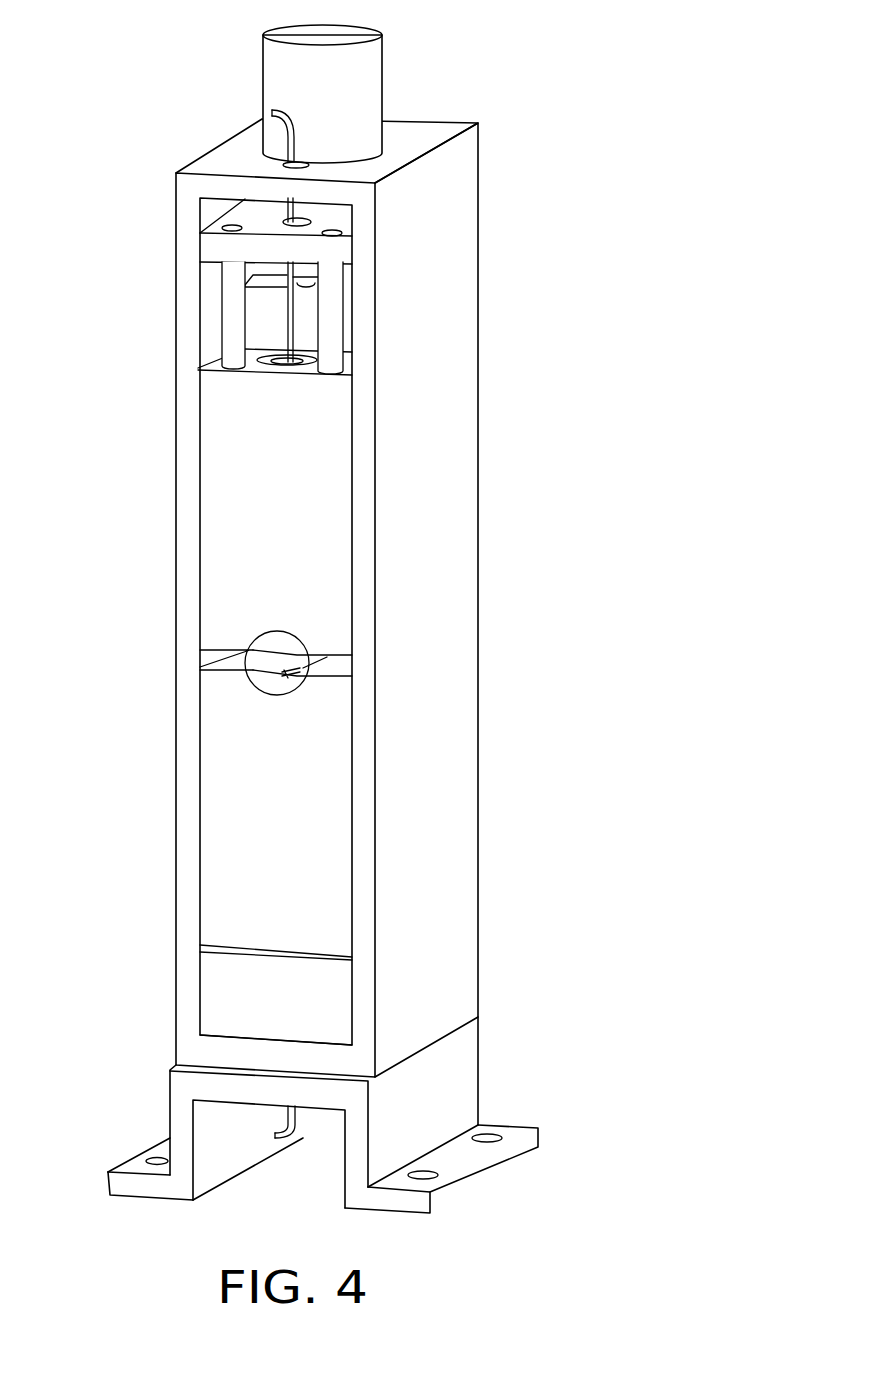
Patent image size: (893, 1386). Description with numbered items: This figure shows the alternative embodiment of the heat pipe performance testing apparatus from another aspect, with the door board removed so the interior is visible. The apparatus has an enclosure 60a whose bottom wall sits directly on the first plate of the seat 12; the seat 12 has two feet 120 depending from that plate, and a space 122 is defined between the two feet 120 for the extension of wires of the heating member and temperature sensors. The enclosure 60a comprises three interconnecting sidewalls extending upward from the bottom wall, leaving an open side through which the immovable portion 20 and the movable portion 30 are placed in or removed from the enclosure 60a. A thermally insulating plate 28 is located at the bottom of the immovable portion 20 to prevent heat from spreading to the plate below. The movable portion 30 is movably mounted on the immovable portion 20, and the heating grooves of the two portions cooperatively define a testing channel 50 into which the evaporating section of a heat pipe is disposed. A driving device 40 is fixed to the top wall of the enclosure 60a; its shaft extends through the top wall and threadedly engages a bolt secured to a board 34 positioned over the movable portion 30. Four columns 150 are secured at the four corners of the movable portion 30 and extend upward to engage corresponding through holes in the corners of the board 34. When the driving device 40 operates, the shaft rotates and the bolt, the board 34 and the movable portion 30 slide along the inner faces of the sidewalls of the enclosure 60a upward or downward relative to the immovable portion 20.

The seat 12 is at (458, 1077).
The feet 120 is at (462, 1155).
The space 122 is at (268, 1183).
The immovable portion 20 is at (282, 766).
The thermally insulating plate 28 is at (257, 997).
The movable portion 30 is at (238, 475).
The board 34 is at (220, 247).
The driving device 40 is at (358, 72).
The testing channel 50 is at (268, 678).
The enclosure 60a is at (445, 268).
The columns 150 is at (233, 327).